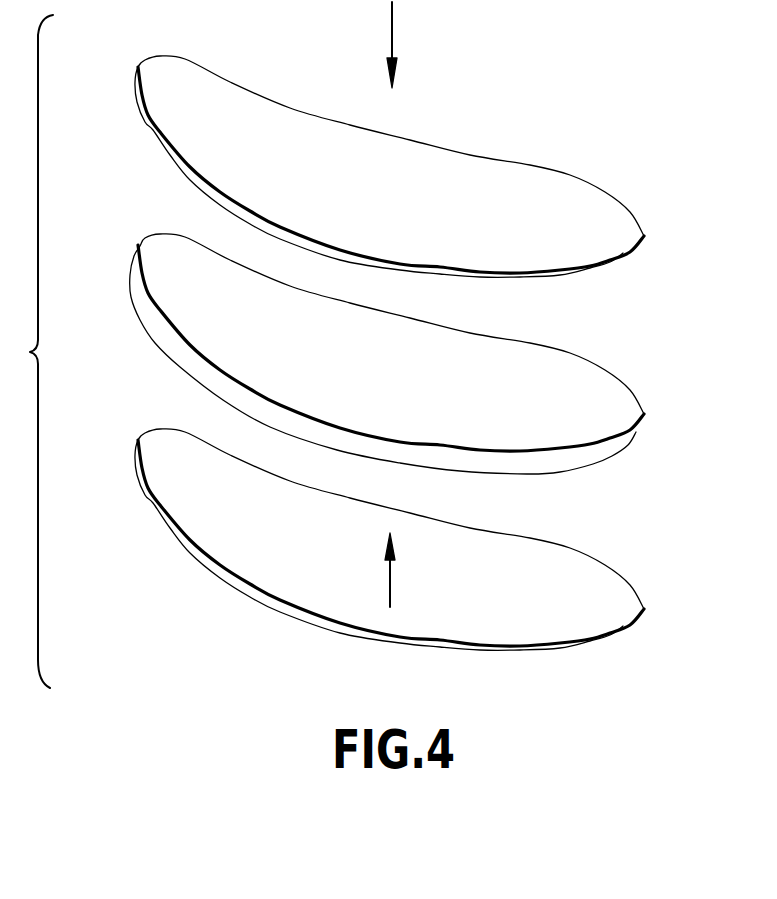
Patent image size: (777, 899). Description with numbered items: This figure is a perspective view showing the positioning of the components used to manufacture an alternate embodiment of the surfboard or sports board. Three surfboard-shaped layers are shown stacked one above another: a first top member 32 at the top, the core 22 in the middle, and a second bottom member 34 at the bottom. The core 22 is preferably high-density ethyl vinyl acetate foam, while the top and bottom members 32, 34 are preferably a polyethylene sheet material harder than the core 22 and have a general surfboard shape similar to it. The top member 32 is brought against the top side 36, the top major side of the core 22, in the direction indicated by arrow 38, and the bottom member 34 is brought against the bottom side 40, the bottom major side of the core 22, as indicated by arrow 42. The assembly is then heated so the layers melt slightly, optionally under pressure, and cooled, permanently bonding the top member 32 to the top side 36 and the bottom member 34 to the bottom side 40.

The core 22 is at (145, 307).
The first top member 32 is at (523, 170).
The second bottom member 34 is at (203, 567).
The top side 36 is at (365, 354).
The arrow 38 is at (394, 19).
The bottom side 40 is at (158, 348).
The arrow 42 is at (390, 590).